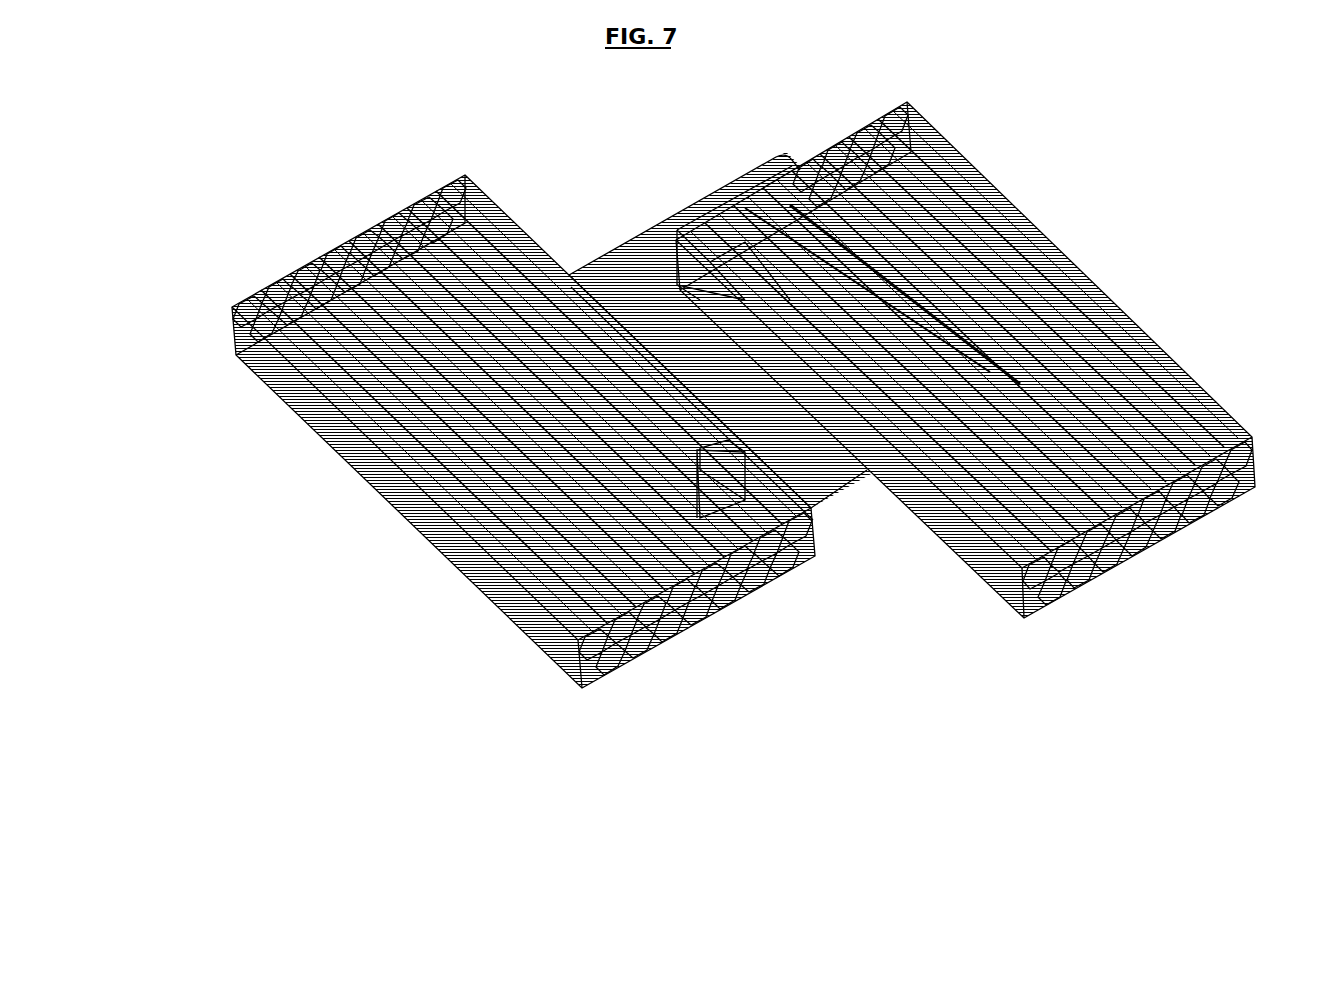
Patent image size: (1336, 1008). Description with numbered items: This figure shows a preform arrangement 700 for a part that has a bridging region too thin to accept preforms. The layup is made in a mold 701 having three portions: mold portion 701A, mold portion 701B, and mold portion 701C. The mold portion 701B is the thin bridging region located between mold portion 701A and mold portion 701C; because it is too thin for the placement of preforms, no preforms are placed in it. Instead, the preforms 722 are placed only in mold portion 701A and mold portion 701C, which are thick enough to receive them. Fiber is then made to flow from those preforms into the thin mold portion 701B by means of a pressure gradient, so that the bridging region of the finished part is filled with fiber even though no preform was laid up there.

The preform arrangement 700 is at (437, 138).
The mold 701 is at (742, 118).
The mold portion 701A is at (245, 353).
The mold portion 701B is at (630, 246).
The mold portion 701C is at (985, 183).
The preforms 722 is at (510, 587).